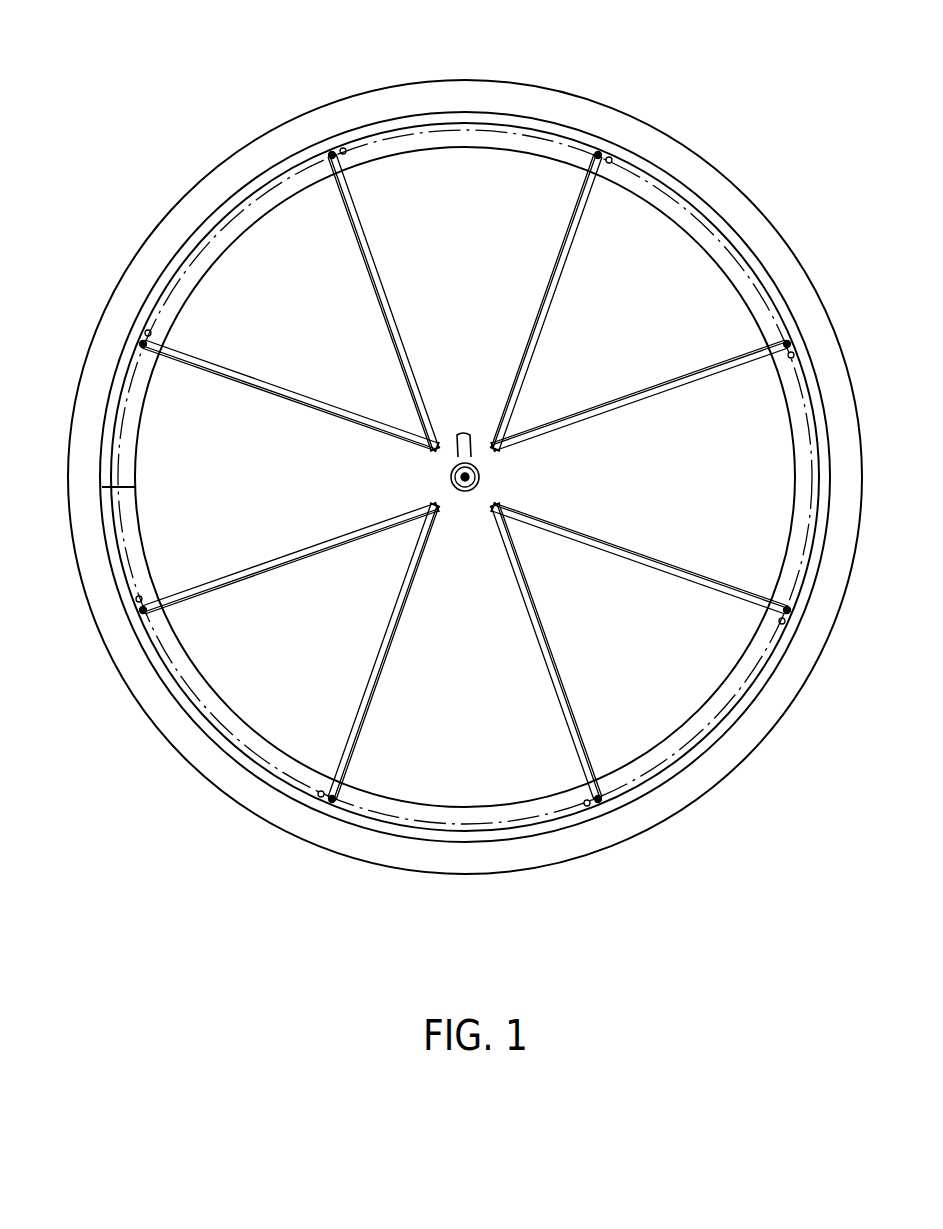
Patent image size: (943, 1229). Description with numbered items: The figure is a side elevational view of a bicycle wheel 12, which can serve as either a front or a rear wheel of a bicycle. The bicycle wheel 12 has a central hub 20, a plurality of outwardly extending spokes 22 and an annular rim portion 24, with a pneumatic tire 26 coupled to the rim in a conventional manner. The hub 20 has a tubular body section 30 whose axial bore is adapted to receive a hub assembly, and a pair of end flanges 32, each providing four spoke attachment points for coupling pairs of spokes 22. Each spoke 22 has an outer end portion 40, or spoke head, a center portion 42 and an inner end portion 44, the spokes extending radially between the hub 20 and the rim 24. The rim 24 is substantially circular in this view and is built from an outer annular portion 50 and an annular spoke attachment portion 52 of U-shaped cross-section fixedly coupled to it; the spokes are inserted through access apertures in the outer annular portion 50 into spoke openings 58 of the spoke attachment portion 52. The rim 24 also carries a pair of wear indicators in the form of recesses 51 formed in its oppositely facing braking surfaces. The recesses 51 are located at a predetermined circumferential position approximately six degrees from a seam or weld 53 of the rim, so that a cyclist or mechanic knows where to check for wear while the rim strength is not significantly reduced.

The bicycle wheel 12 is at (459, 439).
The central hub 20 is at (471, 522).
The spokes 22 is at (465, 442).
The annular rim portion 24 is at (438, 439).
The pneumatic tire 26 is at (465, 439).
The tubular body section 30 is at (397, 525).
The end flanges 32 is at (427, 475).
The outer end portion 40 is at (465, 442).
The center portion 42 is at (362, 272).
The inner end portion 44 is at (427, 465).
The outer annular portion 50 is at (433, 113).
The recesses 51 is at (105, 440).
The annular spoke attachment portion 52 is at (433, 146).
The seam or weld 53 is at (120, 480).
The spoke openings 58 is at (322, 152).